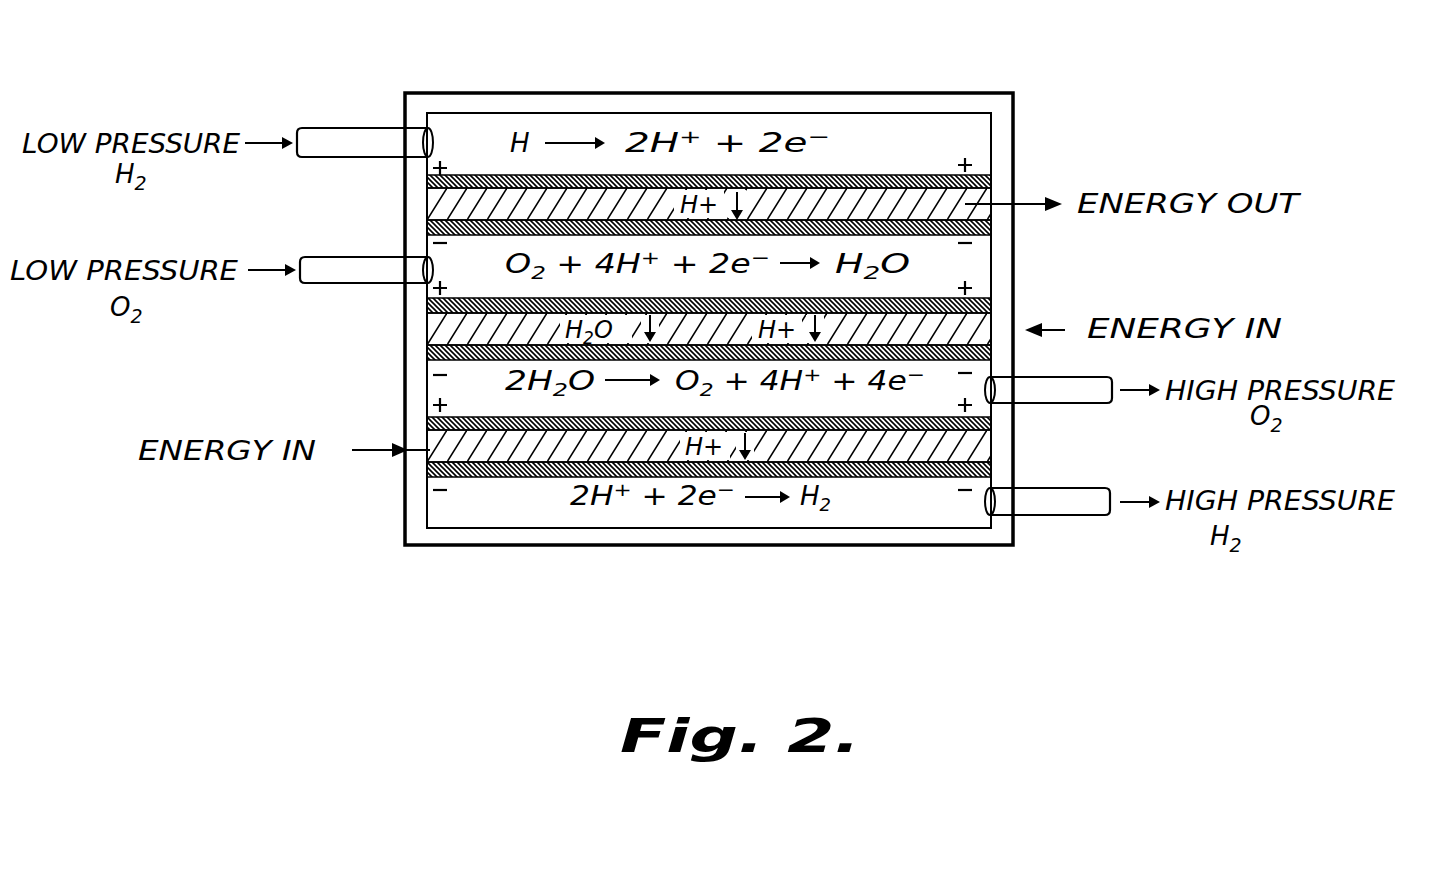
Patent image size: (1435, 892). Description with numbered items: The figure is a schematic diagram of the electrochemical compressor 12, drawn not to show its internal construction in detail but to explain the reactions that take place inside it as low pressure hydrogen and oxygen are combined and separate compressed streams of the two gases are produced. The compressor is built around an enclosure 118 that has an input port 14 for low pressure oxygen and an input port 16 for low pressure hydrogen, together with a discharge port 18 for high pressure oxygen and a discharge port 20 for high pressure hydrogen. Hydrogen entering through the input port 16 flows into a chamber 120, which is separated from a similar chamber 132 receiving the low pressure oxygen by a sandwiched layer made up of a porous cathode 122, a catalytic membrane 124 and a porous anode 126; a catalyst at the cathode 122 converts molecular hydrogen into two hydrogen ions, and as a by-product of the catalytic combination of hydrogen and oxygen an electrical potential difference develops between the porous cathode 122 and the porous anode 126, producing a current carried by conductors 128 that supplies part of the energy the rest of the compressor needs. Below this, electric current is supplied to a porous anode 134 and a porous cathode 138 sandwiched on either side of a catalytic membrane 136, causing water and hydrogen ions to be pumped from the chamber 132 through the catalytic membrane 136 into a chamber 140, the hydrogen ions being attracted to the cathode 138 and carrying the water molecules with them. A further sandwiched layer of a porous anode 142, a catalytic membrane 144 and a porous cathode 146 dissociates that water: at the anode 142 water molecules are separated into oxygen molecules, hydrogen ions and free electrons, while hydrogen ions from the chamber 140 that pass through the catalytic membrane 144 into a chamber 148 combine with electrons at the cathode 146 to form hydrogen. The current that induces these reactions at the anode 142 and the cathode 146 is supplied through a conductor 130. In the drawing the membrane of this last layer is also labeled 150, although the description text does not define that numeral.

The electrochemical compressor 12 is at (620, 563).
The input port 14 is at (312, 283).
The input port 16 is at (345, 130).
The discharge port 18 is at (1095, 405).
The discharge port 20 is at (1075, 510).
The enclosure 118 is at (678, 100).
The chamber 120 is at (913, 120).
The porous cathode 122 is at (430, 182).
The catalytic membrane 124 is at (430, 200).
The porous anode 126 is at (430, 232).
The conductors 128 is at (975, 202).
The conductor 130 is at (975, 332).
The chamber 132 is at (975, 268).
The porous anode 134 is at (430, 305).
The catalytic membrane 136 is at (430, 328).
The porous cathode 138 is at (430, 355).
The chamber 140 is at (430, 385).
The porous anode 142 is at (985, 422).
The catalytic membrane 144 is at (985, 452).
The porous cathode 146 is at (430, 476).
The chamber 148 is at (430, 512).
The membrane 150 is at (400, 448).